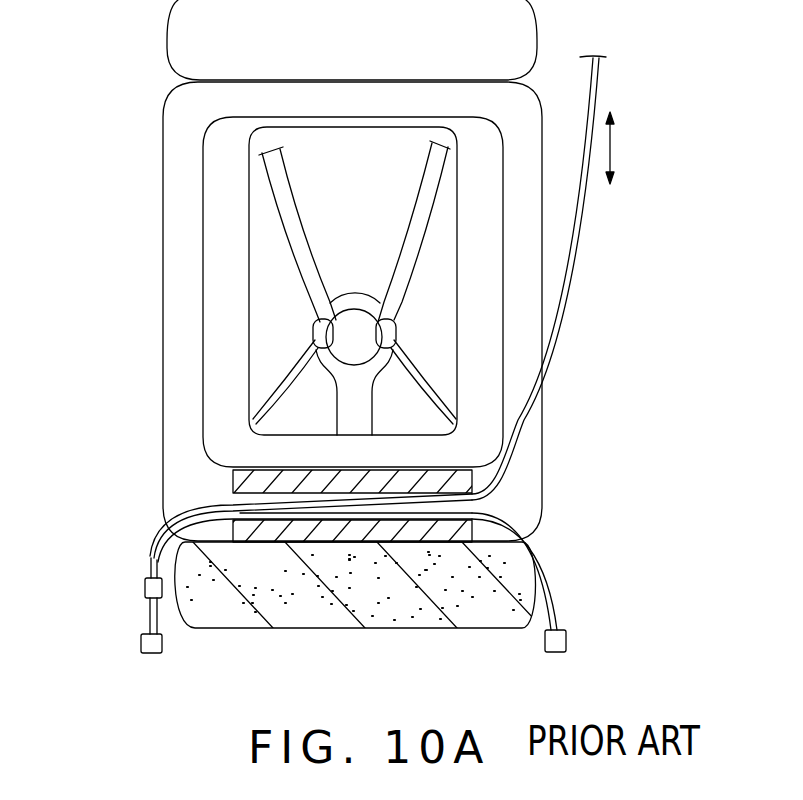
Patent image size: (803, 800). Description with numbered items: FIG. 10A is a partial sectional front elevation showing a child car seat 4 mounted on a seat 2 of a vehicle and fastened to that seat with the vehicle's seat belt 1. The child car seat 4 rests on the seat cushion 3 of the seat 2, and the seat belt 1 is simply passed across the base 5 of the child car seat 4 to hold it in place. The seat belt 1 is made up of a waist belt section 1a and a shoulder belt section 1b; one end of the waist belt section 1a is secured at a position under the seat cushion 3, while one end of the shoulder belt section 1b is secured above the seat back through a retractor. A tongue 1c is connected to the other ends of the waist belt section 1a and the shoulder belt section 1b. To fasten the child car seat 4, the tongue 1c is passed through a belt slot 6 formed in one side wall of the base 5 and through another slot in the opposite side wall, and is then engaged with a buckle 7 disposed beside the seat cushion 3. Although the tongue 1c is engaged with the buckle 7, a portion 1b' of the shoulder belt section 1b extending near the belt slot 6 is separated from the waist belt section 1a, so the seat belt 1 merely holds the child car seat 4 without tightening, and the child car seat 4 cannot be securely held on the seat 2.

The seat belt 1 is at (578, 240).
The waist belt section 1a is at (553, 578).
The shoulder belt section 1b is at (633, 120).
The portion of the shoulder belt section 1b' is at (387, 500).
The tongue 1c is at (146, 566).
The seat 2 is at (155, 272).
The seat cushion 3 is at (383, 612).
The child car seat 4 is at (243, 209).
The base 5 is at (257, 482).
The belt slot 6 is at (240, 502).
The buckle 7 is at (144, 592).